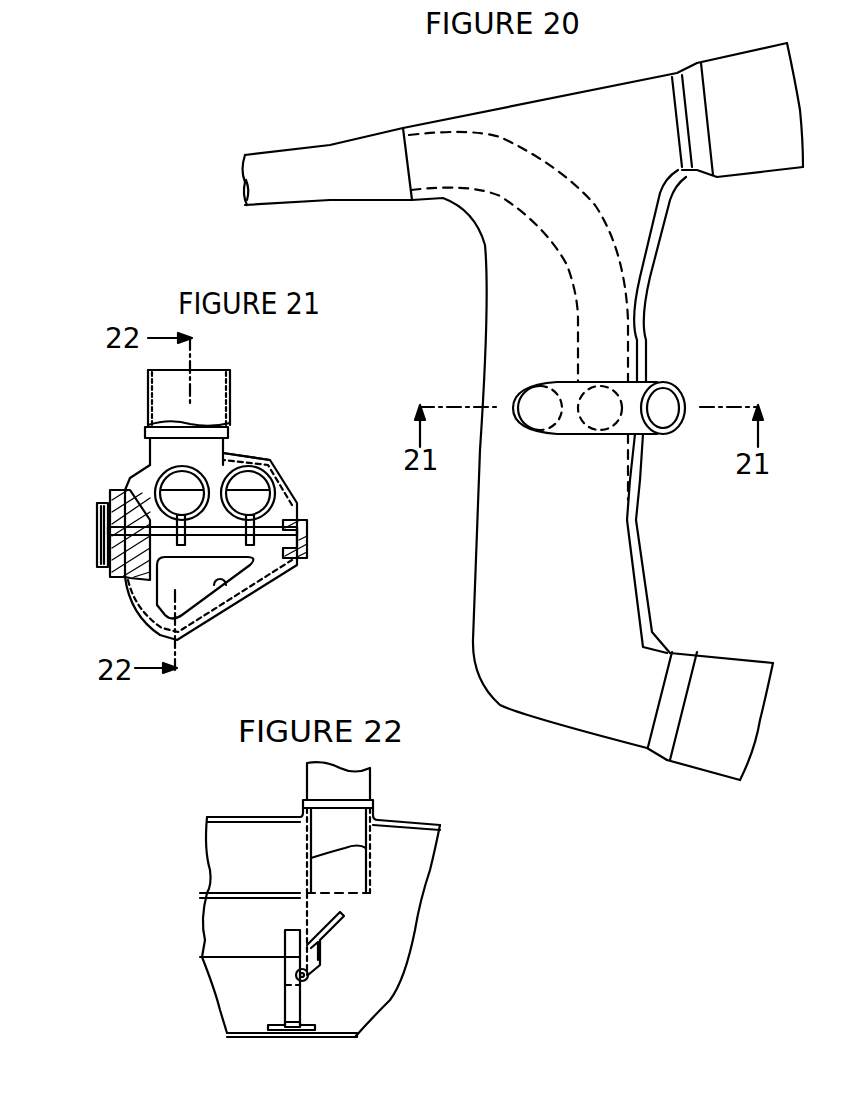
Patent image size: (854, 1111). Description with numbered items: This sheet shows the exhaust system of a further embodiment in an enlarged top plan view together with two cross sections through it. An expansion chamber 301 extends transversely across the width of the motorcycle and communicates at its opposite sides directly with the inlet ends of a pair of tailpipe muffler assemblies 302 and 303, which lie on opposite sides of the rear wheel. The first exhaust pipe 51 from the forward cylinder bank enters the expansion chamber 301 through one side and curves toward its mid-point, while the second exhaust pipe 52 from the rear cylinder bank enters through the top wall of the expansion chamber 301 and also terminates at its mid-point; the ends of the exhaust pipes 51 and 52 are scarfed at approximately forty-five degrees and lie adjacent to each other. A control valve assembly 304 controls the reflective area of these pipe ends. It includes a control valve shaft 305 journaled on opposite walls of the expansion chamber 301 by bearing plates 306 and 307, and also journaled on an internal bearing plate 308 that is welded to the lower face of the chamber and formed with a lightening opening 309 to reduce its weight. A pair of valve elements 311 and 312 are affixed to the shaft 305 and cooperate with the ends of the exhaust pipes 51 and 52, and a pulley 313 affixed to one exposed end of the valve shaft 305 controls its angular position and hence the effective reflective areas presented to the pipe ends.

In FIG. 20, the first exhaust pipe 51 is at (285, 205).
In FIG. 21, the first exhaust pipe 51 is at (268, 465).
In FIG. 22, the first exhaust pipe 51 is at (203, 950).
In FIG. 20, the second exhaust pipe 52 is at (660, 385).
In FIG. 21, the second exhaust pipe 52 is at (232, 386).
In FIG. 22, the second exhaust pipe 52 is at (373, 775).
In FIG. 20, the expansion chamber 301 is at (633, 562).
In FIG. 22, the expansion chamber 301 is at (247, 817).
In FIG. 20, the tailpipe muffler assembly 302 is at (772, 168).
In FIG. 20, the tailpipe muffler assembly 303 is at (752, 640).
In FIG. 21, the control valve assembly 304 is at (267, 449).
In FIG. 22, the control valve assembly 304 is at (363, 945).
In FIG. 21, the control valve shaft 305 is at (262, 541).
In FIG. 22, the control valve shaft 305 is at (308, 977).
In FIG. 21, the bearing plate 306 is at (117, 493).
In FIG. 21, the bearing plate 307 is at (310, 528).
In FIG. 21, the bearing plate 308 is at (147, 593).
In FIG. 22, the bearing plate 308 is at (283, 977).
In FIG. 21, the lightening opening 309 is at (217, 585).
In FIG. 21, the valve element 311 is at (270, 502).
In FIG. 21, the valve element 312 is at (177, 490).
In FIG. 22, the valve element 312 is at (340, 918).
In FIG. 21, the pulley 313 is at (100, 510).